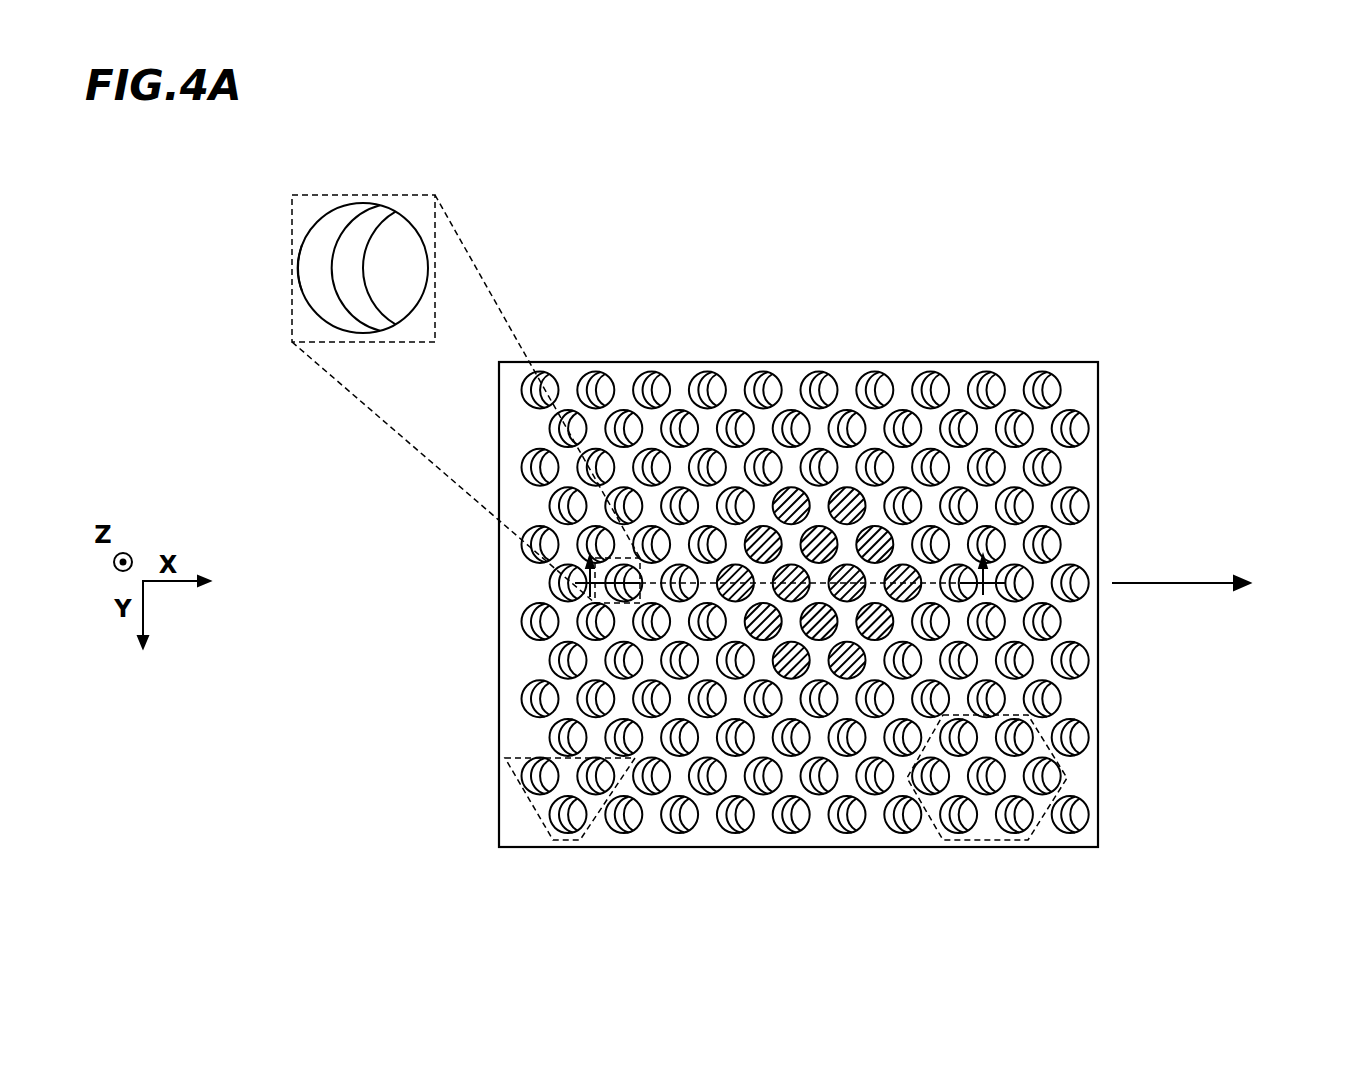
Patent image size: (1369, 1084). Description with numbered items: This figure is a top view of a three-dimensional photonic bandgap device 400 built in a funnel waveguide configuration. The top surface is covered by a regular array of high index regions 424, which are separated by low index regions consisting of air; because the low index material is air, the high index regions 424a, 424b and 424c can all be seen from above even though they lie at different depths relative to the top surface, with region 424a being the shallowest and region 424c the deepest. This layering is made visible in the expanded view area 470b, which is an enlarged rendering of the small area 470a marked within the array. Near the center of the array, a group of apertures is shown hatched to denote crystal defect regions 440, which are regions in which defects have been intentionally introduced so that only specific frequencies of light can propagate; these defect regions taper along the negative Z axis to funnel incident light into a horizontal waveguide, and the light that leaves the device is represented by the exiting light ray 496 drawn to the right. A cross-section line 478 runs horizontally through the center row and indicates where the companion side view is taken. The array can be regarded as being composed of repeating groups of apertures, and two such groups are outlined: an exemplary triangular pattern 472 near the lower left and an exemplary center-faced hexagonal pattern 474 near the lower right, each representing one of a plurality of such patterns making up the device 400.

The 3D photonic bandgap device 400 is at (1248, 206).
The high index regions 424 is at (425, 220).
The high index region 424a is at (405, 243).
The high index region 424b is at (358, 247).
The high index region 424c is at (318, 253).
The crystal defect regions 440 is at (752, 530).
The area 470a is at (597, 603).
The expanded view area 470b is at (292, 198).
The triangular pattern 472 is at (540, 808).
The center-faced hexagonal pattern 474 is at (990, 818).
The cross-section line 478 is at (1000, 572).
The light ray 496 is at (1203, 583).